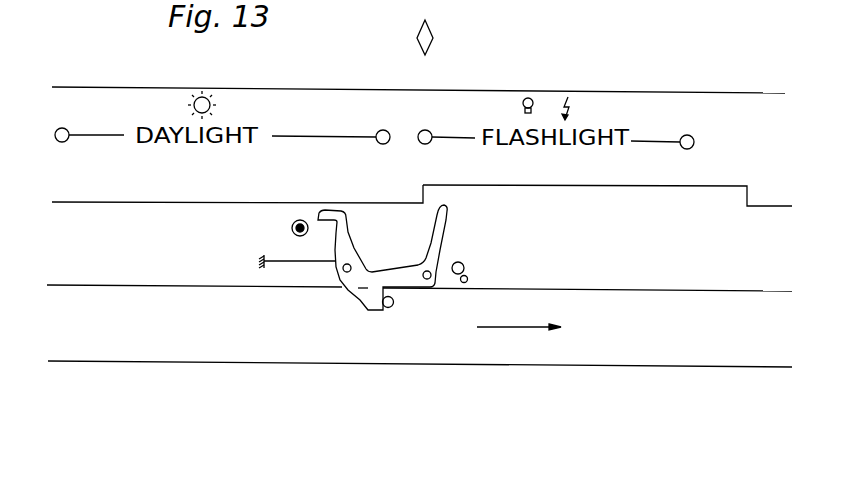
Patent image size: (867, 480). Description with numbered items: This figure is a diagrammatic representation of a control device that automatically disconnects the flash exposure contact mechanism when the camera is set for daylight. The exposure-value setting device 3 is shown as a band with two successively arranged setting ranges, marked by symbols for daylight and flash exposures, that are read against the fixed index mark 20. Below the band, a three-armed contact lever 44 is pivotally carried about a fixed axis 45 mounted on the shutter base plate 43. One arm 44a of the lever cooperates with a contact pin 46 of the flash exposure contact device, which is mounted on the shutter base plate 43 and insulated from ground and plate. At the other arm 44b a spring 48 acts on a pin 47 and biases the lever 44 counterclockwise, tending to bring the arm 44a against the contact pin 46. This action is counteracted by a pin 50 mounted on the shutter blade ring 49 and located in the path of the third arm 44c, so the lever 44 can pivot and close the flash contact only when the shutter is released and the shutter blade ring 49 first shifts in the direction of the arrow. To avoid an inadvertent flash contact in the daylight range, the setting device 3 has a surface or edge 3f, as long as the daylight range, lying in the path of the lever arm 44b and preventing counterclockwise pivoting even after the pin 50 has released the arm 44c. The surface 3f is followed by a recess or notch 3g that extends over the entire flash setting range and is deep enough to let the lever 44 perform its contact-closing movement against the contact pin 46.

The exposure-value setting device 3 is at (622, 104).
The fixed index mark 20 is at (431, 43).
The surface or edge 3f is at (170, 203).
The recess or notch 3g is at (587, 187).
The shutter base plate 43 is at (700, 253).
The three-armed contact lever 44 is at (404, 279).
The arm of the lever 44a is at (334, 216).
The arm of the lever 44b is at (446, 217).
The third arm of the lever 44c is at (368, 308).
The fixed axis 45 is at (350, 265).
The contact pin 46 is at (291, 228).
The pin 47 is at (429, 272).
The spring 48 is at (465, 271).
The shutter blade ring 49 is at (702, 347).
The pin 50 is at (388, 308).